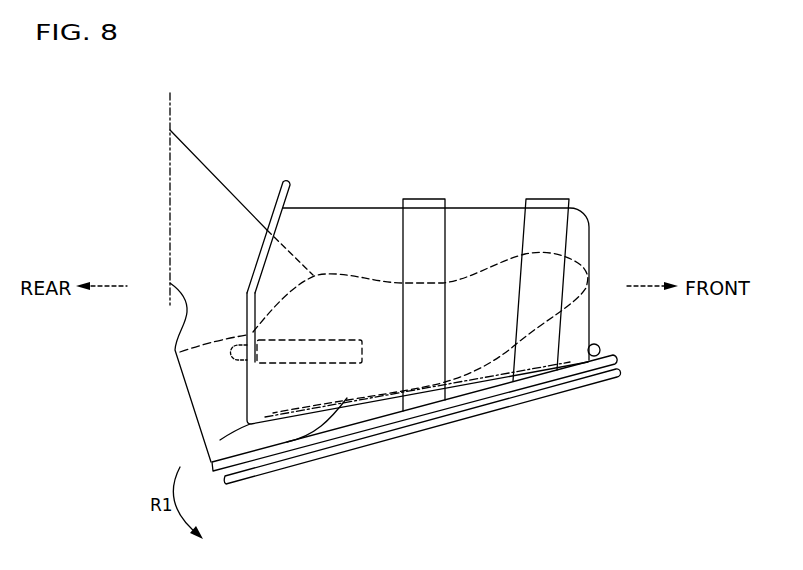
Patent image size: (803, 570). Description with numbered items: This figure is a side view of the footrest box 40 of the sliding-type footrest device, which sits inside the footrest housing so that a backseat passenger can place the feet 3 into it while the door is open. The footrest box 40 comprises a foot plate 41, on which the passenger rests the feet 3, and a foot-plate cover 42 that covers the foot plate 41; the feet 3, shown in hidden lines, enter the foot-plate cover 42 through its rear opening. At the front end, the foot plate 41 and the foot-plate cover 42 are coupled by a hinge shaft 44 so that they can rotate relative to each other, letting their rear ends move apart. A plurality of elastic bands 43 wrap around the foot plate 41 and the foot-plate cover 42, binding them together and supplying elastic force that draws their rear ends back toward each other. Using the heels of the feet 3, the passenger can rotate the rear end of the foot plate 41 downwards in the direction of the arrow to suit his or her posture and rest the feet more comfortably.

The feet 3 is at (483, 343).
The footrest box 40 is at (582, 207).
The foot plate 41 is at (377, 425).
The foot-plate cover 42 is at (358, 206).
The elastic bands 43 is at (535, 202).
The hinge shaft 44 is at (600, 351).